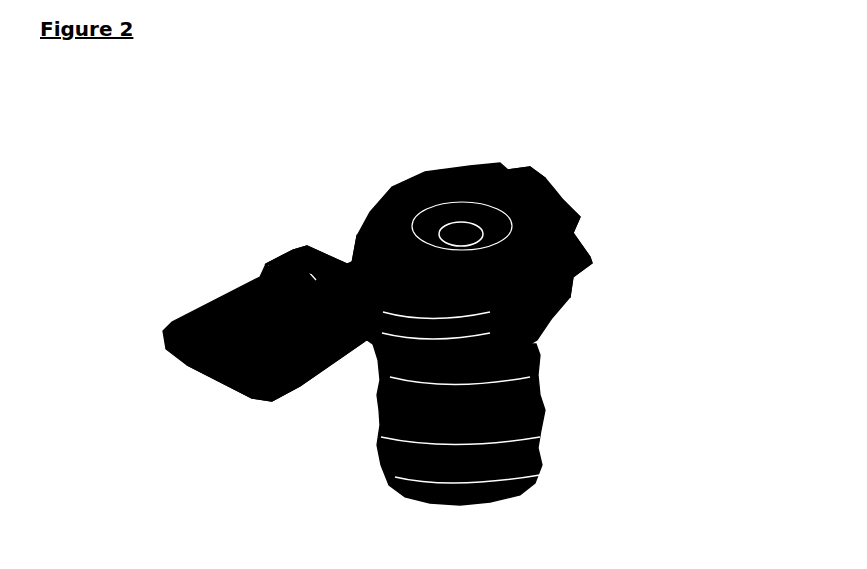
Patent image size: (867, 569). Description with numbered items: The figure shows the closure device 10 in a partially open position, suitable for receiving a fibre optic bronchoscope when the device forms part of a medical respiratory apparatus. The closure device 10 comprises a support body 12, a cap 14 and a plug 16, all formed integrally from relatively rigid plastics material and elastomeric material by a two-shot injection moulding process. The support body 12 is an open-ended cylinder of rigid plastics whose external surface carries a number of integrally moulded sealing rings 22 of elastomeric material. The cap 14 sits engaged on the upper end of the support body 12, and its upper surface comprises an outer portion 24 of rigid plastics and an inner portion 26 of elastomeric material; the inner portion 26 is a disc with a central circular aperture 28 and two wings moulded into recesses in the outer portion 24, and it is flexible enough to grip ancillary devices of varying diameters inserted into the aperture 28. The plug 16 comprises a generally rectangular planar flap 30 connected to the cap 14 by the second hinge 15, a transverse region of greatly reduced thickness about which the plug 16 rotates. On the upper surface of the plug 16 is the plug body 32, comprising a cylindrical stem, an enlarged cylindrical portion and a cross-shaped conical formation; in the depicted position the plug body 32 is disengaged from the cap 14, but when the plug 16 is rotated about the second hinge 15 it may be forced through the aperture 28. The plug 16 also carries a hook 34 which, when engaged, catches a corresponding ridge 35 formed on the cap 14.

The closure device 10 is at (643, 145).
The support body 12 is at (580, 407).
The cap 14 is at (589, 299).
The second hinge 15 is at (383, 260).
The plug 16 is at (200, 281).
The sealing rings 22 is at (383, 362).
The outer portion 24 is at (567, 205).
The inner portion 26 is at (457, 200).
The aperture 28 is at (473, 222).
The flap 30 is at (247, 393).
The plug body 32 is at (297, 250).
The hook 34 is at (217, 384).
The ridge 35 is at (530, 178).